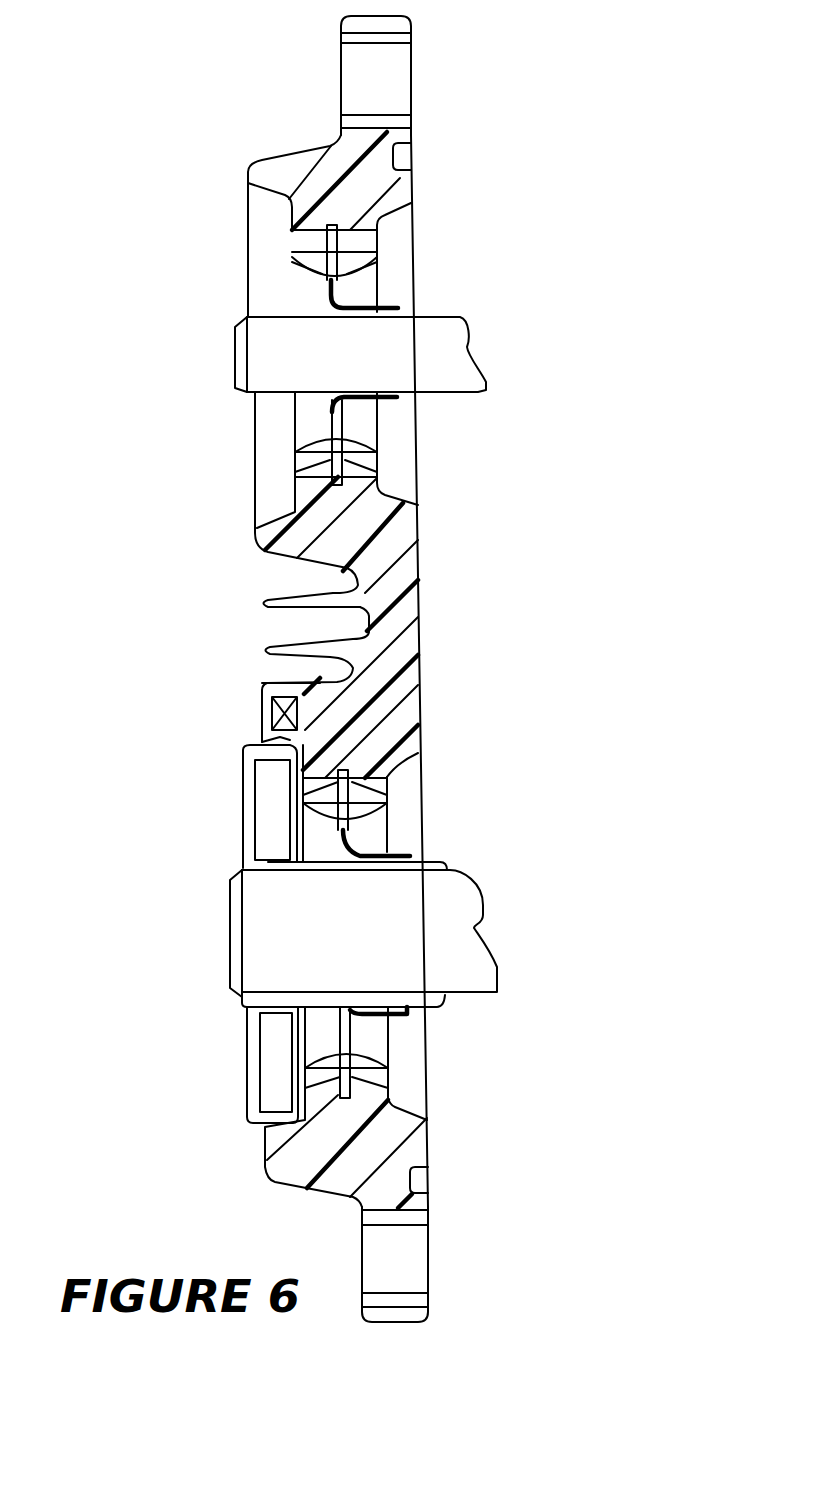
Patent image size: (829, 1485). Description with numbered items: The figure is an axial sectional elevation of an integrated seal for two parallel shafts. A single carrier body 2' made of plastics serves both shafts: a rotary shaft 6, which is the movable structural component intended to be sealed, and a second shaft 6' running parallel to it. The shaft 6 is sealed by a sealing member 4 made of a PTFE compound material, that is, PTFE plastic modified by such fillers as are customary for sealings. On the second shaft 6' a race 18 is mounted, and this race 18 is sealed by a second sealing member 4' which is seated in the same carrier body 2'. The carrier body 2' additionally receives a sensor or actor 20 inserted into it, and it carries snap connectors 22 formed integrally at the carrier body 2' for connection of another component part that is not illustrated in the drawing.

The carrier body 2' is at (436, 669).
The sealing member 4 is at (410, 355).
The second sealing member 4' is at (417, 934).
The rotary shaft 6 is at (363, 295).
The second shaft 6' is at (406, 926).
The race 18 is at (287, 862).
The sensor or actor 20 is at (275, 712).
The snap connectors 22 is at (263, 650).